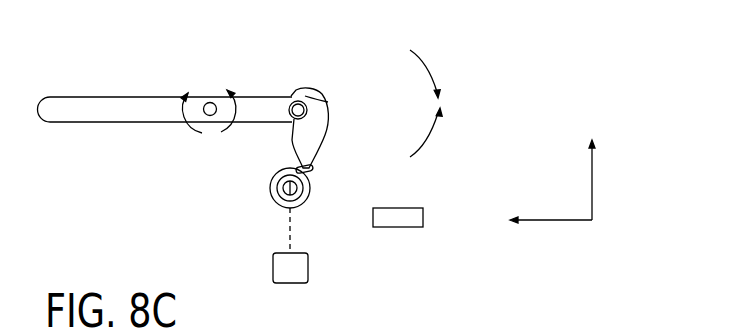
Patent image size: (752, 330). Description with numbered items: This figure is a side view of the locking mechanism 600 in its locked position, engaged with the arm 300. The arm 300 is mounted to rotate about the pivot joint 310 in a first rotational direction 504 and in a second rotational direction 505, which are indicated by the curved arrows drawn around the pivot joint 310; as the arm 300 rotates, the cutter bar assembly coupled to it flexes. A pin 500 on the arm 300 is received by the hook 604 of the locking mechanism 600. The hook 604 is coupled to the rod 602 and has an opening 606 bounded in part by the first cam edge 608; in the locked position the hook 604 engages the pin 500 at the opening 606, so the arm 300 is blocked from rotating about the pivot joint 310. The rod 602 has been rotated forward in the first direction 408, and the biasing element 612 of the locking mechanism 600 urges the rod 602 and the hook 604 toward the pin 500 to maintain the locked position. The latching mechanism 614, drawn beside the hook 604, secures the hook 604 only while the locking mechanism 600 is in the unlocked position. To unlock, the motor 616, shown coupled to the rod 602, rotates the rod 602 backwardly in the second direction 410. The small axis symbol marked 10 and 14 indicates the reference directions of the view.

The arm 300 is at (57, 123).
The pivot joint 310 is at (210, 102).
The pin 500 is at (290, 110).
The first rotational direction 504 is at (225, 120).
The second rotational direction 505 is at (187, 117).
The locking mechanism 600 is at (448, 29).
The rod 602 is at (272, 183).
The hook 604 is at (325, 132).
The opening 606 is at (328, 102).
The first cam edge 608 is at (305, 92).
The biasing element 612 is at (283, 191).
The latching mechanism 614 is at (385, 208).
The motor 616 is at (308, 268).
The first direction 408 is at (427, 147).
The second direction 410 is at (427, 64).
The horizontal axis 10 is at (568, 222).
The vertical axis 14 is at (593, 172).